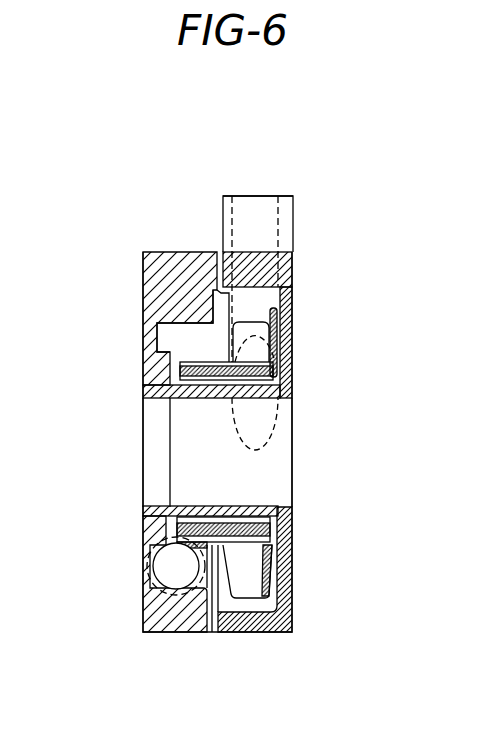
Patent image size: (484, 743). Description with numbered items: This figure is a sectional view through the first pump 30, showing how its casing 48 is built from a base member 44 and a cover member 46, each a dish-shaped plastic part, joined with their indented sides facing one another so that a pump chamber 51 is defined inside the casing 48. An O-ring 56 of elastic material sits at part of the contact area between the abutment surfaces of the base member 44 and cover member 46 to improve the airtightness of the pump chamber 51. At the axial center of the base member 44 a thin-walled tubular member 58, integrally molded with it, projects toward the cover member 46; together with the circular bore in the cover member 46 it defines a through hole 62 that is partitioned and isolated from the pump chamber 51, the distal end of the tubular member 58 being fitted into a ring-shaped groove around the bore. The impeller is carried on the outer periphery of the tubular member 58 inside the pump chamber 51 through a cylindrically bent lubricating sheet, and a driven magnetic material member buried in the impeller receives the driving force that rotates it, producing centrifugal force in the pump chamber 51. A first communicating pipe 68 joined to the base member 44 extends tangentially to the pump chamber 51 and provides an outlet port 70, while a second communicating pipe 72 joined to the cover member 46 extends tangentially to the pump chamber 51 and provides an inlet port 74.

The first pump 30 is at (314, 174).
The base member 44 is at (292, 270).
The cover member 46 is at (160, 285).
The casing 48 is at (143, 426).
The pump chamber 51 is at (165, 328).
The O-ring 56 is at (220, 290).
The tubular member 58 is at (224, 508).
The through hole 62 is at (249, 490).
The first communicating pipe 68 is at (282, 204).
The outlet port 70 is at (259, 186).
The second communicating pipe 72 is at (142, 596).
The inlet port 74 is at (118, 567).